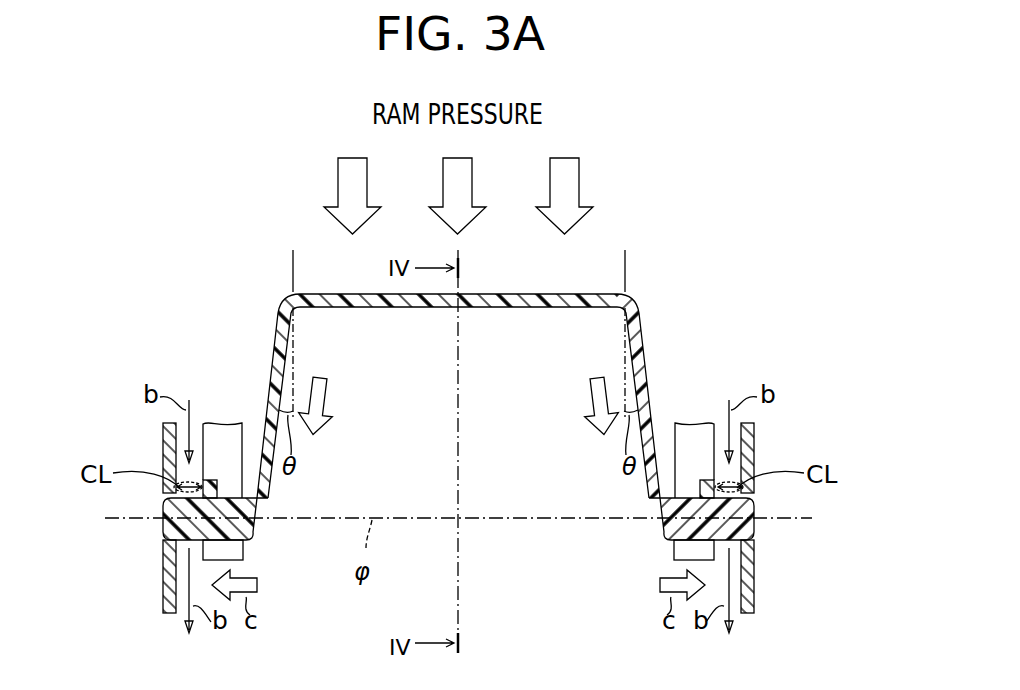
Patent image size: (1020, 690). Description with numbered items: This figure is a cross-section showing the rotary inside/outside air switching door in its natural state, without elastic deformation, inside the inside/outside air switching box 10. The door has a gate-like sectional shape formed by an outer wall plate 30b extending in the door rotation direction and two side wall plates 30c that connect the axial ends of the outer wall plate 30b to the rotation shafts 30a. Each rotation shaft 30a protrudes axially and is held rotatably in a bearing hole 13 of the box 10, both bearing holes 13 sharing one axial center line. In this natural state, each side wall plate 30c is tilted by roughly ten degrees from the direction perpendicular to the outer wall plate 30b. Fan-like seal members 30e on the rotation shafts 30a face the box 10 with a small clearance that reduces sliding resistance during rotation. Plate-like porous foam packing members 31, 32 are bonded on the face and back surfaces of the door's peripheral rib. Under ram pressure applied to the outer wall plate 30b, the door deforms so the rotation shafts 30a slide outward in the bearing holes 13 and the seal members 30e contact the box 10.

The inside/outside air switching box 10 is at (154, 450).
The bearing holes 13 is at (172, 542).
The rotation shafts 30a is at (168, 536).
The outer wall plate 30b is at (500, 296).
The side wall plates 30c is at (273, 349).
The seal members 30e is at (210, 480).
The packing member 31 is at (231, 440).
The packing member 32 is at (237, 553).